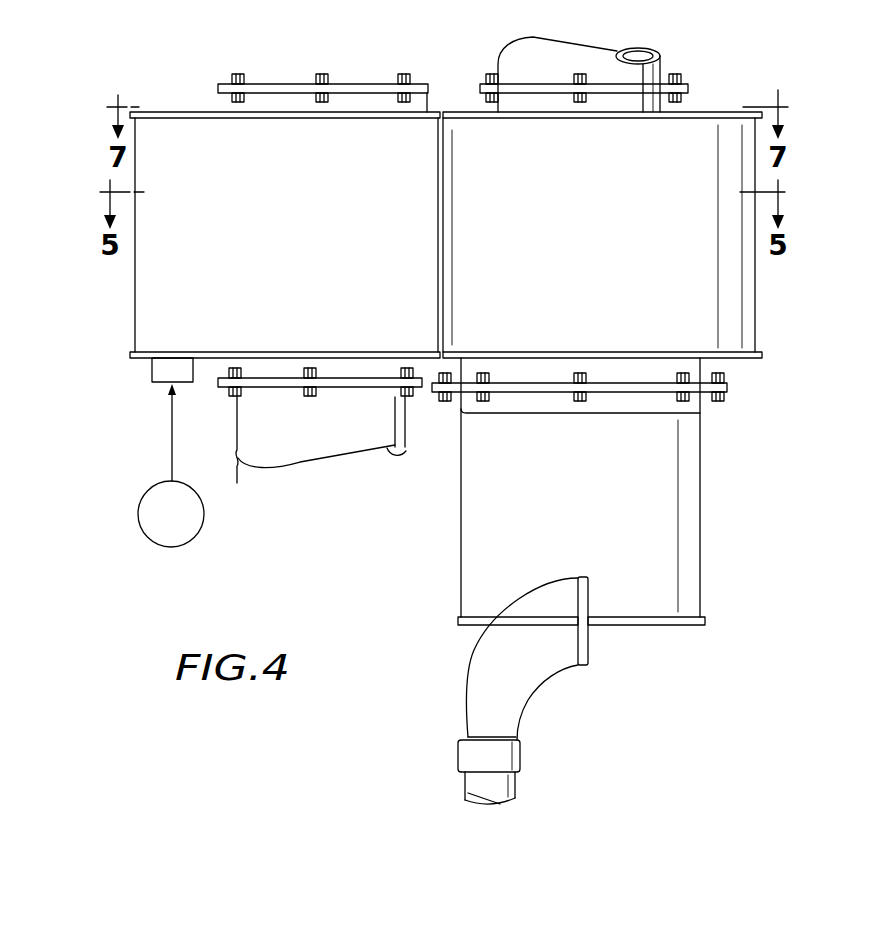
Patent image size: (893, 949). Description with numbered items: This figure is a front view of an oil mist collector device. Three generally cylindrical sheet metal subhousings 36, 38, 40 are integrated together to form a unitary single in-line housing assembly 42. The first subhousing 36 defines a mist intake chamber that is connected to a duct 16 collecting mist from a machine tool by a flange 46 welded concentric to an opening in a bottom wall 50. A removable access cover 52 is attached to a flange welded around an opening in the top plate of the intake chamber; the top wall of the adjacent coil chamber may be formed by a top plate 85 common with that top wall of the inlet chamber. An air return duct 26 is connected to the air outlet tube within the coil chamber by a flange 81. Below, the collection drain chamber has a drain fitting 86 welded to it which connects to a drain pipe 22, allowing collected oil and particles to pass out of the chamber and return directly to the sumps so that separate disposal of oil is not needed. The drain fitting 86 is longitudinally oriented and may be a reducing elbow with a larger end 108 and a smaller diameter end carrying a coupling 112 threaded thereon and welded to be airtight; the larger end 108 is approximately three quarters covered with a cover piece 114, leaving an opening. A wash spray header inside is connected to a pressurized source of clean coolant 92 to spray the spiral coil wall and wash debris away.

The duct 16 is at (313, 457).
The drain pipe 22 is at (515, 786).
The air return duct 26 is at (498, 63).
The first subhousing 36 is at (199, 135).
The second subhousing 38 is at (758, 308).
The third subhousing 40 is at (690, 519).
The housing assembly 42 is at (686, 47).
The flange 46 is at (333, 373).
The bottom wall 50 is at (188, 352).
The removable access cover 52 is at (268, 83).
The flange 81 is at (686, 98).
The top plate 85 is at (428, 112).
The drain fitting 86 is at (466, 668).
The pressurized source of clean coolant 92 is at (204, 526).
The larger end 108 is at (590, 633).
The coupling 112 is at (458, 756).
The cover piece 114 is at (592, 665).